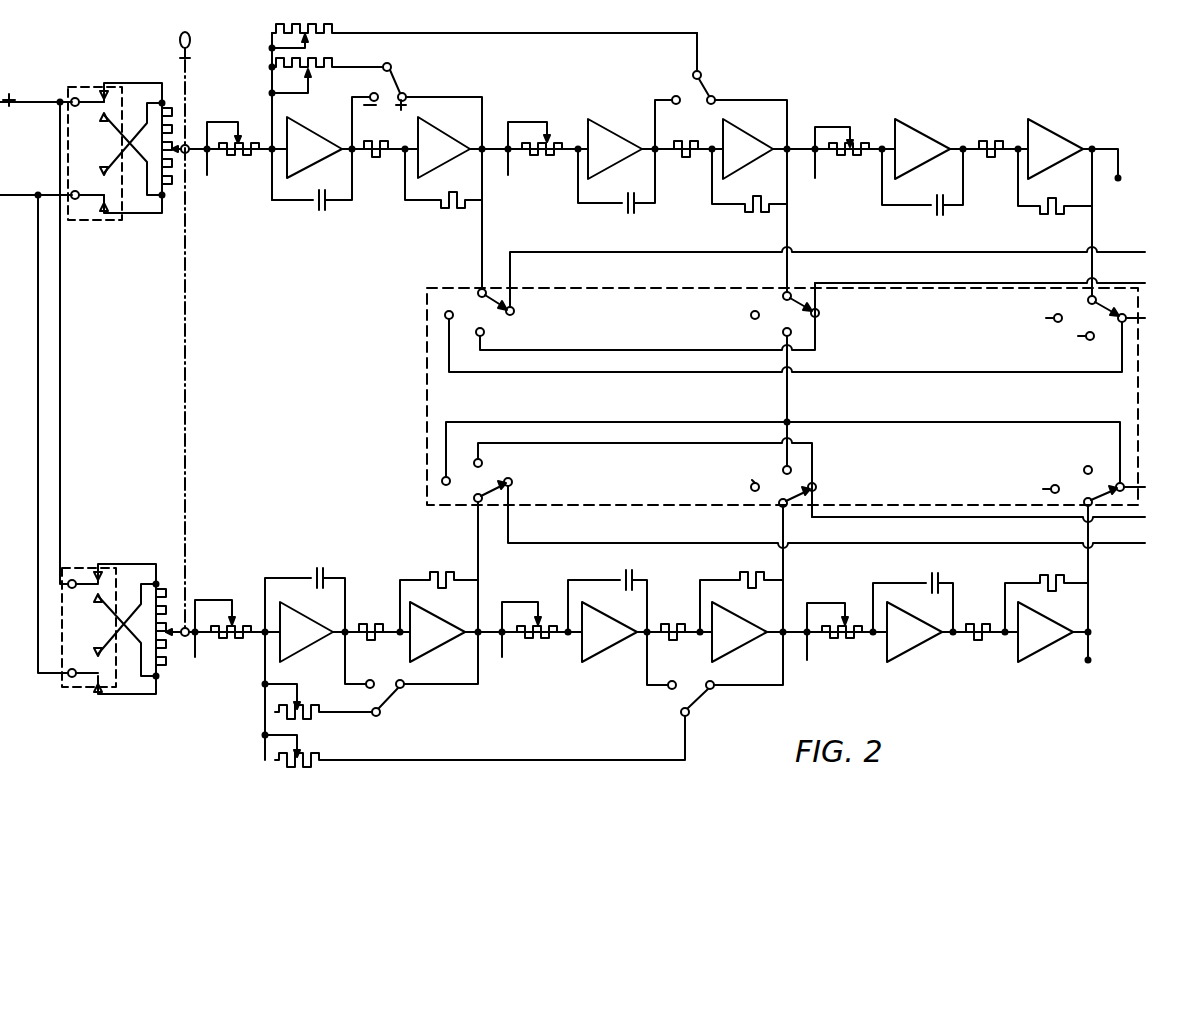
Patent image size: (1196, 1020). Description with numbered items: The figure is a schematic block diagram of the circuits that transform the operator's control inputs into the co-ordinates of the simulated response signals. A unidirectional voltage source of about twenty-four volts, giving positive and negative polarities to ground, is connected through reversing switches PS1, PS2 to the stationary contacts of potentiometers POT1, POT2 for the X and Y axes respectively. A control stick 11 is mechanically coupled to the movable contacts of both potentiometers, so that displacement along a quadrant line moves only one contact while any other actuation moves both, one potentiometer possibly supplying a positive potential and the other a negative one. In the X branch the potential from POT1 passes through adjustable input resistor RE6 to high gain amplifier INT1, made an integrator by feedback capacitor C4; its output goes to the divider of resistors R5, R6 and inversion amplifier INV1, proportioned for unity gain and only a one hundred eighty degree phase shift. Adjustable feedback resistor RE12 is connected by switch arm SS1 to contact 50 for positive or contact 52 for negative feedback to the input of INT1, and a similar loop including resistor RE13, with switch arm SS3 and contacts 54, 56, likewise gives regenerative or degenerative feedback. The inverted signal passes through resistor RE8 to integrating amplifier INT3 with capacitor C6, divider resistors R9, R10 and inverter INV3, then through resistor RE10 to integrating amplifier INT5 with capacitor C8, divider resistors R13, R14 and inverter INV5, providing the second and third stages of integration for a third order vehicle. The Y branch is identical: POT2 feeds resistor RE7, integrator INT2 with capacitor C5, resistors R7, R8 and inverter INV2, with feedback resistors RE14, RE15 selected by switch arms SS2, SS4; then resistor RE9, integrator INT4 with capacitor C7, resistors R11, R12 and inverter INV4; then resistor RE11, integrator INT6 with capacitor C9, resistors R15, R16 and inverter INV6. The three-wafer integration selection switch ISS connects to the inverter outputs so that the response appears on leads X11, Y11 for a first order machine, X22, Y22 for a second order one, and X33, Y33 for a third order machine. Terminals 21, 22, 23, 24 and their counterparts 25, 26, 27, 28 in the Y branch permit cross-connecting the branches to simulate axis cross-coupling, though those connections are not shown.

The control stick 11 is at (191, 40).
The terminal 21 is at (209, 172).
The terminal 22 is at (507, 175).
The terminal 23 is at (808, 175).
The terminal 24 is at (1109, 178).
The terminal 25 is at (198, 659).
The terminal 26 is at (502, 658).
The terminal 27 is at (805, 658).
The terminal 28 is at (1087, 660).
The contact 50 is at (408, 95).
The contact 52 is at (372, 93).
The switch contact 54 is at (672, 96).
The switch contact 56 is at (718, 97).
The reversing switch PS1 is at (76, 97).
The reversing switch PS2 is at (73, 580).
The potentiometer POT1 is at (150, 77).
The potentiometer POT2 is at (146, 557).
The adjustable input resistor RE6 is at (250, 143).
The relay coil RE7 is at (230, 638).
The input resistor RE8 is at (537, 153).
The relay coil RE9 is at (531, 632).
The resistor RE10 is at (844, 156).
The relay coil RE11 is at (836, 634).
The adjustable feedback resistor RE12 is at (320, 65).
The resistor RE13 is at (314, 30).
The relay coil RE14 is at (318, 701).
The relay coil RE15 is at (474, 741).
The resistor R5 is at (372, 145).
The resistor R6 is at (443, 178).
The resistor R7 is at (368, 622).
The resistor R8 is at (439, 591).
The resistor R9 is at (680, 145).
The resistor R10 is at (749, 180).
The resistor R11 is at (667, 627).
The resistor R12 is at (741, 592).
The resistor R13 is at (993, 140).
The resistor R14 is at (1055, 181).
The resistor R15 is at (975, 623).
The resistor R16 is at (1046, 593).
The feedback capacitor C4 is at (312, 179).
The capacitor C5 is at (305, 591).
The capacitor C6 is at (616, 181).
The capacitor C7 is at (607, 591).
The capacitor C8 is at (922, 182).
The capacitor C9 is at (913, 593).
The switch arm SS1 is at (392, 68).
The selector switch SS2 is at (411, 674).
The selector switch SS3 is at (703, 78).
The selector switch SS4 is at (715, 674).
The integrating amplifier INT1 is at (312, 147).
The integrator 2 INT2 is at (305, 632).
The integrating amplifier INT3 is at (617, 149).
The integrator 4 INT4 is at (608, 632).
The integrating amplifier INT5 is at (923, 149).
The integrator 6 INT6 is at (913, 632).
The inversion amplifier INV1 is at (444, 147).
The inverter 2 INV2 is at (439, 632).
The inversion amplifier INV3 is at (750, 149).
The inverter 4 INV4 is at (742, 632).
The inversion amplifier INV5 is at (1055, 149).
The inverter 6 INV6 is at (1047, 632).
The integration selection switch ISS is at (427, 380).
The output lead X11 is at (846, 275).
The output lead X22 is at (999, 284).
The output lead X33 is at (1154, 319).
The output lead Y11 is at (845, 520).
The output lead Y22 is at (997, 517).
The output lead Y33 is at (1153, 488).